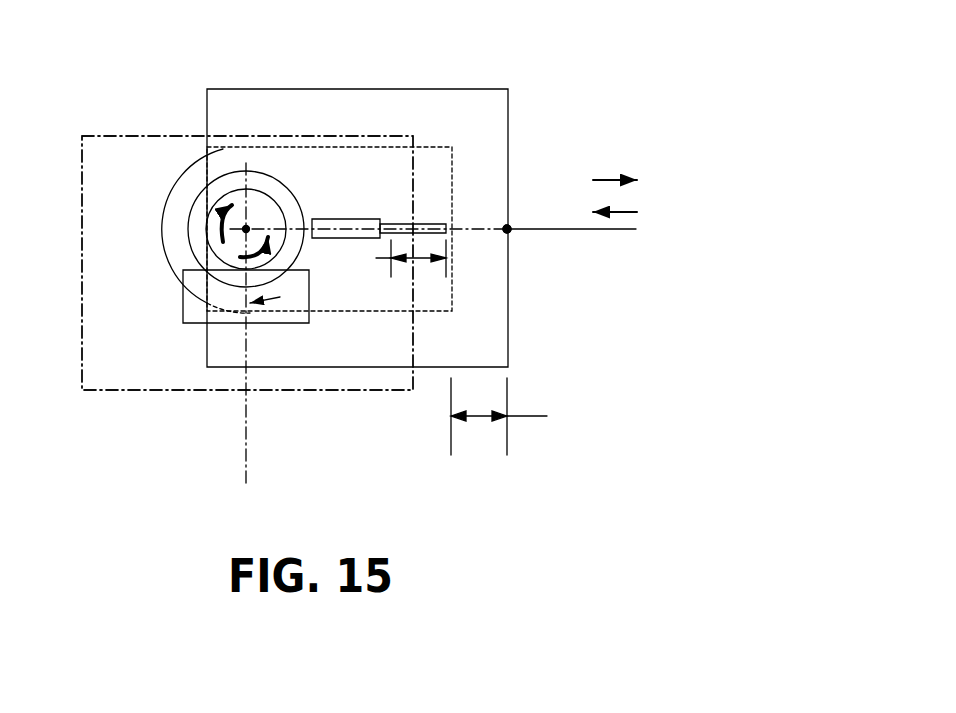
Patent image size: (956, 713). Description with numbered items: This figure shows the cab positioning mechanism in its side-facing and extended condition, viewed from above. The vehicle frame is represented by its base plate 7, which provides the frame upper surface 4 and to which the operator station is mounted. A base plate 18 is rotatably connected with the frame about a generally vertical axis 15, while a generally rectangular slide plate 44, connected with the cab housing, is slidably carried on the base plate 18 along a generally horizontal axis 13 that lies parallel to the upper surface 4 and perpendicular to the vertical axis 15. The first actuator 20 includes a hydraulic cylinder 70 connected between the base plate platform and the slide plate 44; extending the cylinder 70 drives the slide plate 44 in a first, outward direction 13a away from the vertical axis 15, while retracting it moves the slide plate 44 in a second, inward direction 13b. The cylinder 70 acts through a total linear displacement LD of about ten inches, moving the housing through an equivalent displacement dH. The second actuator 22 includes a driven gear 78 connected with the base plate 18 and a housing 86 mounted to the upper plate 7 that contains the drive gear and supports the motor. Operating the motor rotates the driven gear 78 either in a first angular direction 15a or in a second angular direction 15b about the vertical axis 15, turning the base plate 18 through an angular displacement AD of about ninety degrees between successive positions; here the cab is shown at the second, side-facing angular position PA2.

The frame upper surface 4 is at (115, 150).
The base plate 7 is at (103, 215).
The horizontal axis 13 is at (585, 229).
The first, outward direction 13a is at (635, 178).
The second, inward direction 13b is at (635, 209).
The vertical axis 15 is at (246, 229).
The first angular direction 15a is at (242, 253).
The second angular direction 15b is at (222, 212).
The base plate 18 is at (190, 163).
The first actuator 20 is at (354, 217).
The second actuator 22 is at (180, 284).
The slide plate 44 is at (468, 90).
The hydraulic cylinder 70 is at (317, 219).
The driven gear 78 is at (188, 222).
The housing 86 is at (190, 317).
The second, side-facing angular position PA2 is at (508, 228).
The total linear displacement LD is at (398, 260).
The housing displacement dH is at (392, 301).
The angular displacement AD is at (278, 293).